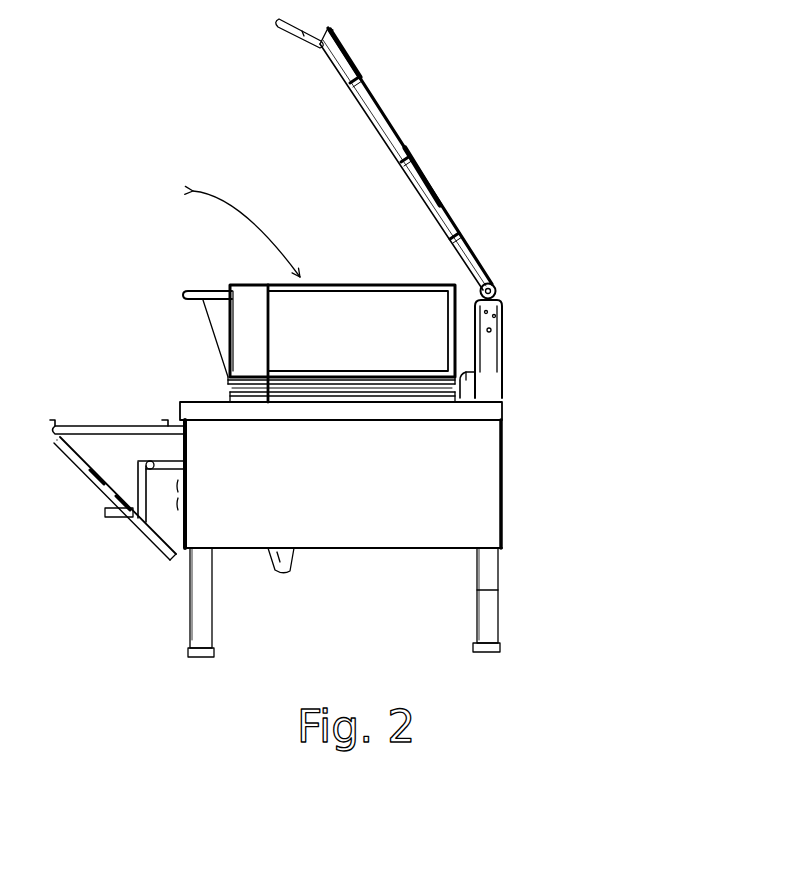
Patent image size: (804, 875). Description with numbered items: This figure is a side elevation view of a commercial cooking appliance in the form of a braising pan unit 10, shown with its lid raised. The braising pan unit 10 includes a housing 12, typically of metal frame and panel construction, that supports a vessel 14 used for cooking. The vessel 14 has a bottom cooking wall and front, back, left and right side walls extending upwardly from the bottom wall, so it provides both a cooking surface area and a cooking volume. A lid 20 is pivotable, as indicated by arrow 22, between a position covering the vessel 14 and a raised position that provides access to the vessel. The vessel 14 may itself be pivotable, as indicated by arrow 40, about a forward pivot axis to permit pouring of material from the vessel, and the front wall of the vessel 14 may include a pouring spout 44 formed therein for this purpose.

The braising pan unit 10 is at (165, 192).
The housing 12 is at (490, 447).
The vessel 14 is at (240, 348).
The lid 20 is at (385, 118).
The arrow 22 is at (425, 220).
The arrow 40 is at (240, 207).
The pouring spout 44 is at (186, 292).